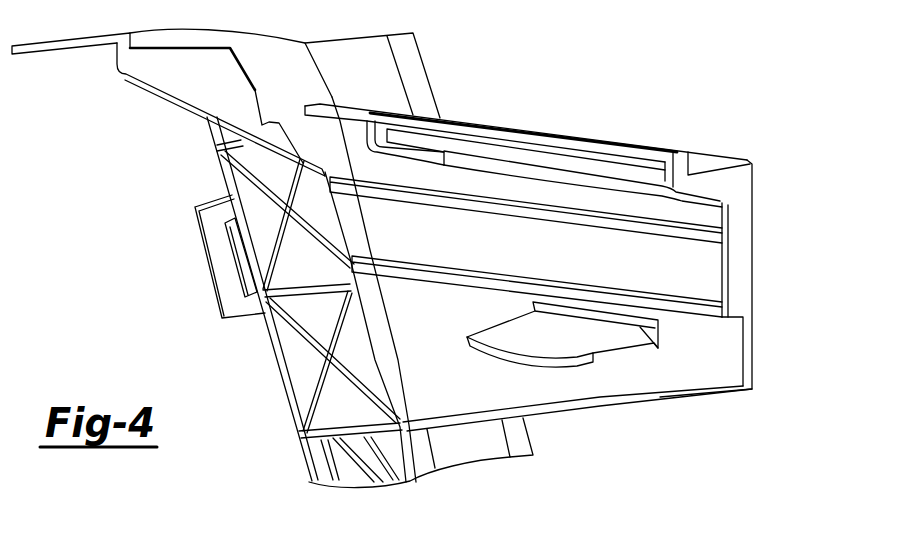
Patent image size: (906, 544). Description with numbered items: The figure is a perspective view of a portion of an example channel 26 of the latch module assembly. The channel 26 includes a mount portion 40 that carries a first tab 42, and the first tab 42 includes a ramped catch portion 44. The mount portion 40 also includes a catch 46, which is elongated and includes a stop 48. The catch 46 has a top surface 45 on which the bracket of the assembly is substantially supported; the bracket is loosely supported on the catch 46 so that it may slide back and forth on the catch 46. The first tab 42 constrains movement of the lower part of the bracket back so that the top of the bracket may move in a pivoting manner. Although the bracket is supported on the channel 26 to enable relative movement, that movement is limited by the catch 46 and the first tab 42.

The channel 26 is at (289, 365).
The mount portion 40 is at (570, 245).
The first tab 42 is at (563, 348).
The ramped catch portion 44 is at (520, 355).
The top surface 45 is at (700, 159).
The catch 46 is at (722, 185).
The stop 48 is at (600, 145).